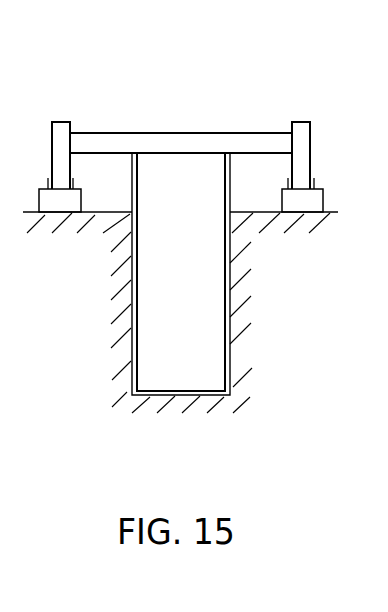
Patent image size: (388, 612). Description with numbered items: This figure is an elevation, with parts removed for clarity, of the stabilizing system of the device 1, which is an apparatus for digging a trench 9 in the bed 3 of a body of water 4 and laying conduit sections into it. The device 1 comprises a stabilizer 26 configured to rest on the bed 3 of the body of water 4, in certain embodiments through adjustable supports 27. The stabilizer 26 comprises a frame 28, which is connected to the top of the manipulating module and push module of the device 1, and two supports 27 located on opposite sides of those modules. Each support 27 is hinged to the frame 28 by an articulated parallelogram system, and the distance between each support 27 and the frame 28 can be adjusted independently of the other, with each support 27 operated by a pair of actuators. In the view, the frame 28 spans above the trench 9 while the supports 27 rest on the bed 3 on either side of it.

The device 1 is at (121, 96).
The bed 3 is at (42, 227).
The body of water 4 is at (334, 142).
The trench 9 is at (196, 214).
The stabilizer 26 is at (40, 148).
The supports 27 is at (46, 200).
The frame 28 is at (187, 145).